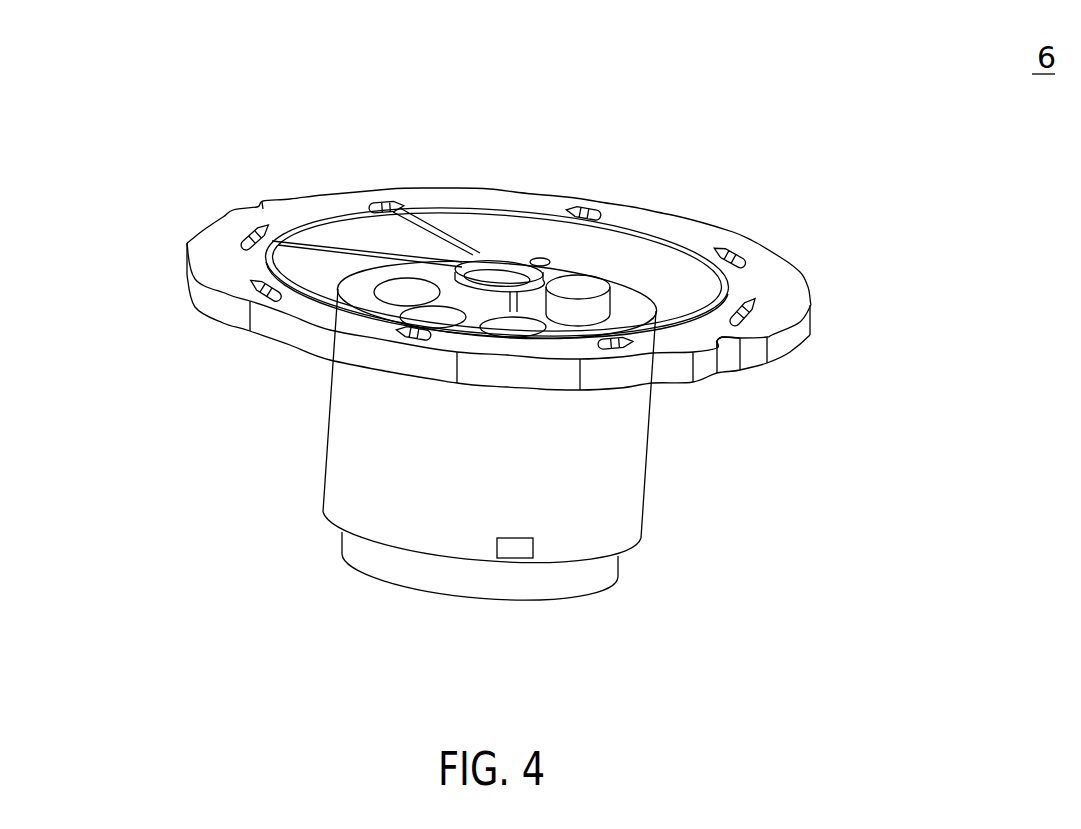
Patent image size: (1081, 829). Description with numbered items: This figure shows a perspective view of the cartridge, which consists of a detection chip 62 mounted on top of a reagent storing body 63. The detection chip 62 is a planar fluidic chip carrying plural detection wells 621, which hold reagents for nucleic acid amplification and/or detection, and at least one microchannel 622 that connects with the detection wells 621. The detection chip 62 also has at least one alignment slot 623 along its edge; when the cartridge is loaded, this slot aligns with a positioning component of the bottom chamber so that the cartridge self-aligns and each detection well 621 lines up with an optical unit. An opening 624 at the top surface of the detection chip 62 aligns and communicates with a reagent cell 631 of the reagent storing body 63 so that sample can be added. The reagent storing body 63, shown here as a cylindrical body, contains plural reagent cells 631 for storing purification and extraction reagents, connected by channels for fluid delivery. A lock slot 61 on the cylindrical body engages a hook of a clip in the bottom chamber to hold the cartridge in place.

The detection chip 62 is at (778, 281).
The detection wells 621 is at (590, 207).
The microchannel 622 is at (643, 234).
The alignment slot 623 is at (730, 360).
The opening 624 is at (692, 293).
The reagent storing body 63 is at (608, 466).
The reagent cells 631 is at (373, 300).
The lock slot 61 is at (533, 547).